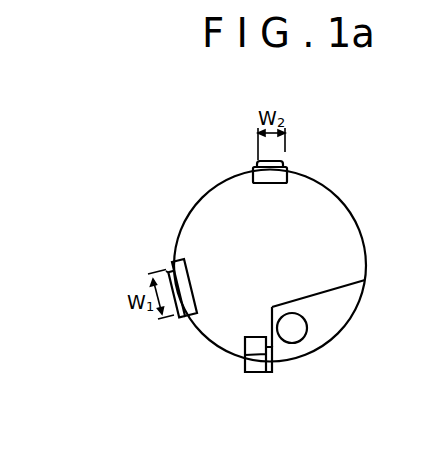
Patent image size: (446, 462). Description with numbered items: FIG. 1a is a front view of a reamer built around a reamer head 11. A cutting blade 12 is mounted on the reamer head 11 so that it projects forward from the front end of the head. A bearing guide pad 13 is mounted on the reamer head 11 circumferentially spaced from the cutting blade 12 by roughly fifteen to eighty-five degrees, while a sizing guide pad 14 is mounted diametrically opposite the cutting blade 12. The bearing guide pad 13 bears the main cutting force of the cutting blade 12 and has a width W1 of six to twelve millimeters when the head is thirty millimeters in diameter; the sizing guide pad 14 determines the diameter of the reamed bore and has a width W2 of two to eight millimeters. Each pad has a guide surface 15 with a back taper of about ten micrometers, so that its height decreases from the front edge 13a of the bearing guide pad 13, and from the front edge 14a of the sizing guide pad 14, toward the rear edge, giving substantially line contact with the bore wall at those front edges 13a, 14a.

The reamer head 11 is at (353, 263).
The cutting blade 12 is at (257, 364).
The bearing guide pad 13 is at (178, 260).
The front edge 13a is at (173, 312).
The sizing guide pad 14 is at (262, 164).
The front edge 14a is at (274, 161).
The guide surface 15 is at (166, 271).